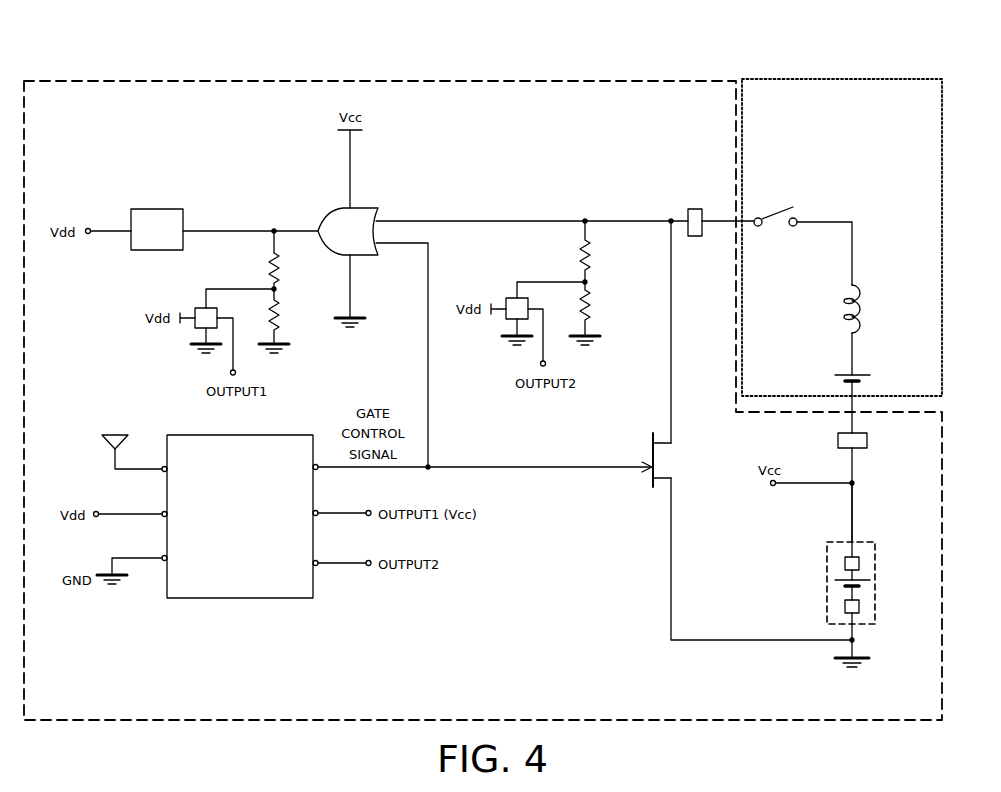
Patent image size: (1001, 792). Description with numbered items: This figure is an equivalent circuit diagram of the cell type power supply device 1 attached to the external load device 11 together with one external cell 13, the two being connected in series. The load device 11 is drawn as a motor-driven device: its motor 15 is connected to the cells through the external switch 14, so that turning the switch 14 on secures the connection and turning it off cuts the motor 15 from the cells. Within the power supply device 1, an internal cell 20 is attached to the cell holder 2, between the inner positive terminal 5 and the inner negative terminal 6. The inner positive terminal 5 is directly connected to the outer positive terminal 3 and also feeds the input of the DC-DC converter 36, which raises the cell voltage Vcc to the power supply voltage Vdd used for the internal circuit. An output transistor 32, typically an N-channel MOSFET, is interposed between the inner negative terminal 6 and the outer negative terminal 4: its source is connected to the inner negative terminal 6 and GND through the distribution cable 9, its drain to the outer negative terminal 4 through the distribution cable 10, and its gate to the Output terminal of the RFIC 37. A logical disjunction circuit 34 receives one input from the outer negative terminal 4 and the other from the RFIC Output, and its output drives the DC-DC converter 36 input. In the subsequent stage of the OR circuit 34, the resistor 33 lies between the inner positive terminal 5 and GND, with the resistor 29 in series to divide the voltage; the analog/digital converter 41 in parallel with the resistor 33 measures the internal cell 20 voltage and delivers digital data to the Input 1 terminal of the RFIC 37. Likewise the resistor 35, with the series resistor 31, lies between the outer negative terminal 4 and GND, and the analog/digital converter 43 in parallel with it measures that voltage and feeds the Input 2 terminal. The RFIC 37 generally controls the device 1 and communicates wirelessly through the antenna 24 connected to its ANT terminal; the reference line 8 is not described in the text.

The cell type power supply device 1 is at (560, 79).
The cell holder 2 is at (875, 540).
The outer positive terminal 3 is at (870, 442).
The outer negative terminal 4 is at (695, 207).
The inner positive terminal 5 is at (860, 563).
The inner negative terminal 6 is at (860, 612).
The signal line 8 is at (850, 503).
The distribution cable 9 is at (803, 643).
The distribution cable 10 is at (674, 272).
The external load device 11 is at (846, 77).
The external cell 13 is at (831, 376).
The external switch 14 is at (798, 207).
The motor 15 is at (866, 290).
The internal cell 20 is at (868, 590).
The antenna 24 is at (102, 433).
The resistor 29 is at (280, 263).
The resistor 31 is at (593, 258).
The output transistor 32 is at (644, 440).
The resistor 33 is at (280, 318).
The logical disjunction circuit 34 is at (375, 207).
The resistor 35 is at (593, 310).
The DC-DC converter 36 is at (182, 209).
The RFIC 37 is at (203, 600).
The analog/digital converter 41 is at (197, 307).
The analog/digital converter 43 is at (507, 298).